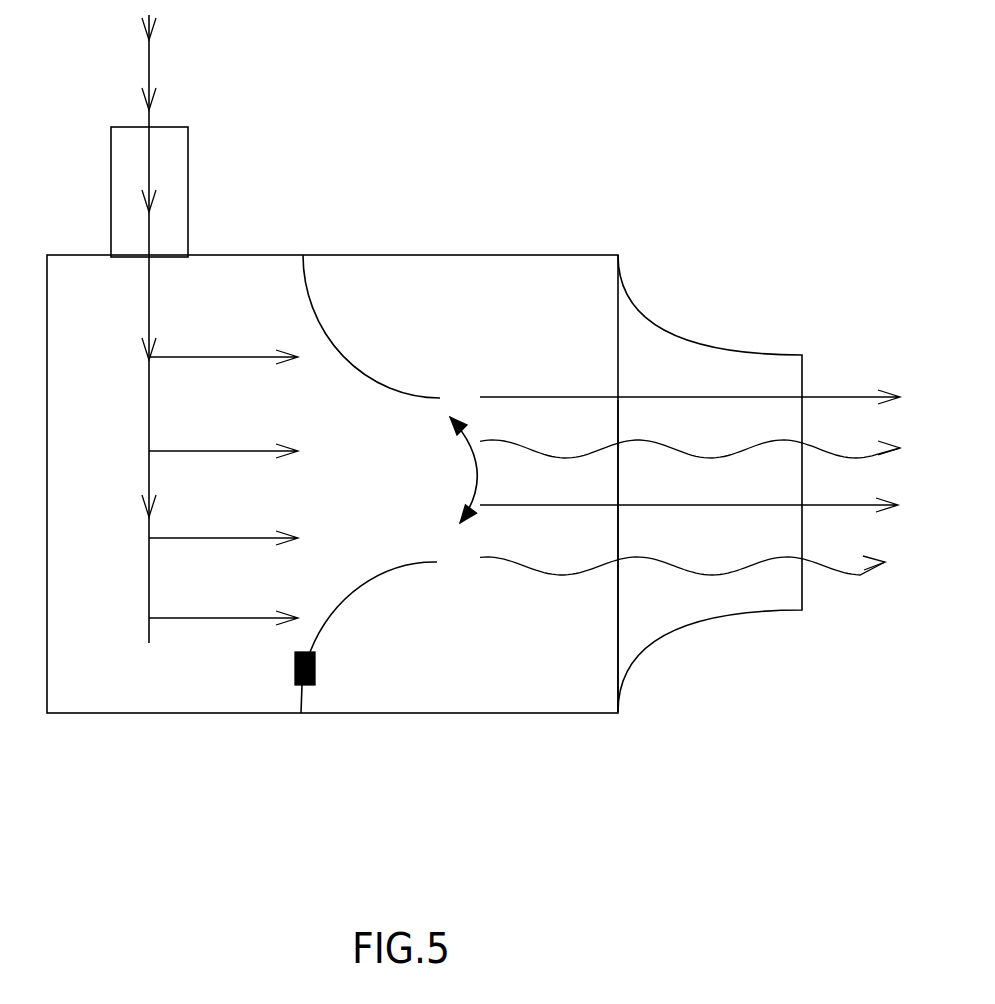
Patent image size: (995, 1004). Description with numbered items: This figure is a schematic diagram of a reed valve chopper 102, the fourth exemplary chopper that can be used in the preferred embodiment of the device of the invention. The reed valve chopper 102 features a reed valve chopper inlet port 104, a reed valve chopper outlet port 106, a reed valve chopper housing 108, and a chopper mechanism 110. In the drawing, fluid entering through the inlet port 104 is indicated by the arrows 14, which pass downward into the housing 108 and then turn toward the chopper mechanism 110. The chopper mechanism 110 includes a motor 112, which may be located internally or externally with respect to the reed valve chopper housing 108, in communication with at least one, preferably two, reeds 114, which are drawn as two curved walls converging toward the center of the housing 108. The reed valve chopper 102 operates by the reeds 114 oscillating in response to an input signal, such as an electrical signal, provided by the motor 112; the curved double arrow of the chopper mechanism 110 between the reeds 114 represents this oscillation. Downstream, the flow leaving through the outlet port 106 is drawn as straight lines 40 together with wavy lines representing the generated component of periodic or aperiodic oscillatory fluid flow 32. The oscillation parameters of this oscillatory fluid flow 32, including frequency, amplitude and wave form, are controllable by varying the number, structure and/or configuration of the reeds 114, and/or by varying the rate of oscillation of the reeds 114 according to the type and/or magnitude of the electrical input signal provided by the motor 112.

The fluid flow 14 is at (220, 329).
The reed valve chopper inlet port 104 is at (185, 192).
The reed valve chopper housing 108 is at (210, 713).
The reeds 114 is at (330, 350).
The motor 112 is at (315, 666).
The chopper mechanism 110 is at (428, 470).
The reed valve chopper outlet port 106 is at (675, 602).
The straight flow stream 40 is at (690, 441).
The component of periodic or aperiodic oscillatory fluid flow 32 is at (690, 501).
The reed valve chopper 102 is at (621, 596).